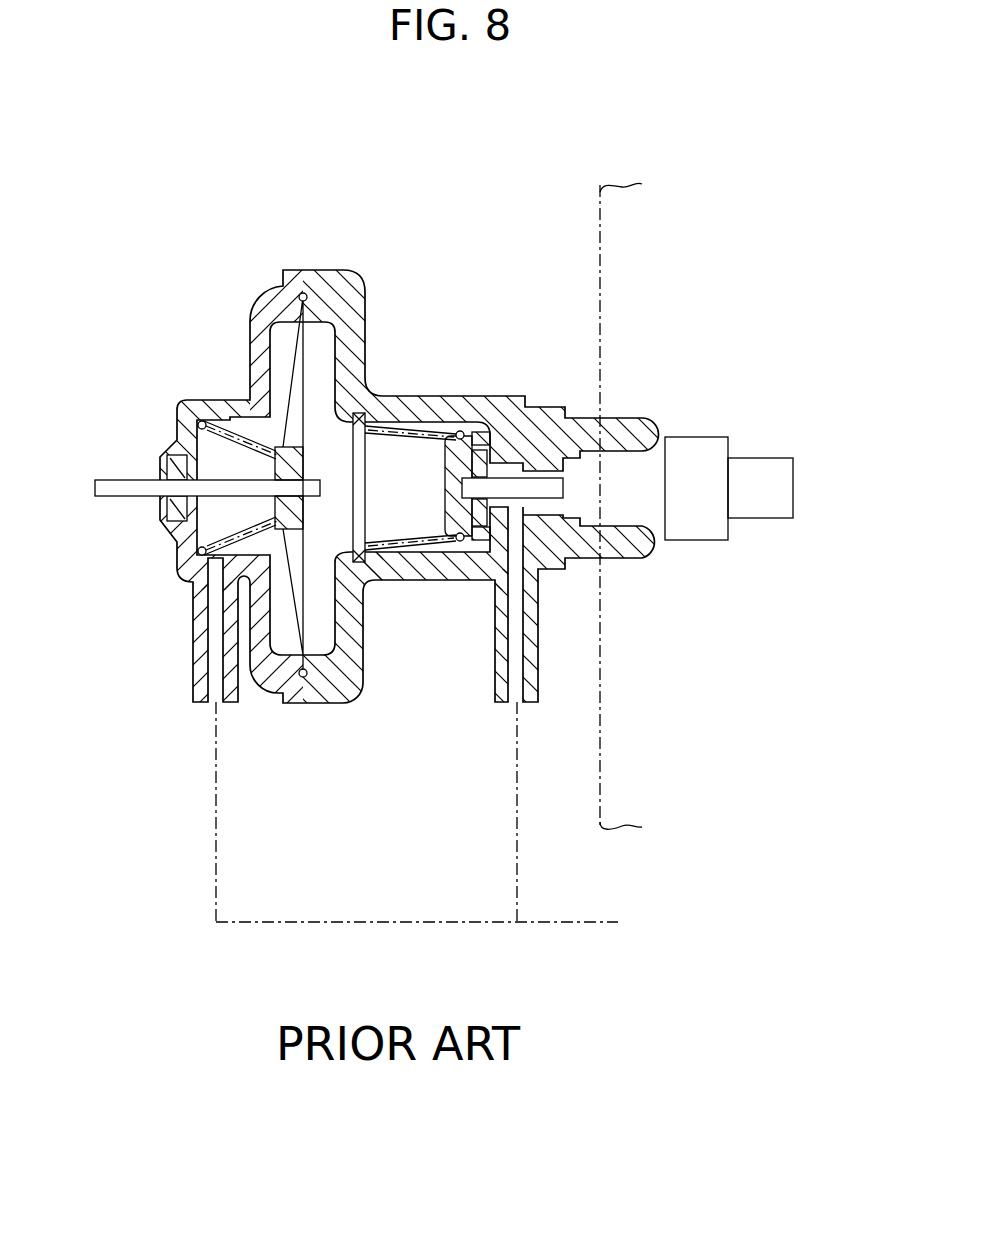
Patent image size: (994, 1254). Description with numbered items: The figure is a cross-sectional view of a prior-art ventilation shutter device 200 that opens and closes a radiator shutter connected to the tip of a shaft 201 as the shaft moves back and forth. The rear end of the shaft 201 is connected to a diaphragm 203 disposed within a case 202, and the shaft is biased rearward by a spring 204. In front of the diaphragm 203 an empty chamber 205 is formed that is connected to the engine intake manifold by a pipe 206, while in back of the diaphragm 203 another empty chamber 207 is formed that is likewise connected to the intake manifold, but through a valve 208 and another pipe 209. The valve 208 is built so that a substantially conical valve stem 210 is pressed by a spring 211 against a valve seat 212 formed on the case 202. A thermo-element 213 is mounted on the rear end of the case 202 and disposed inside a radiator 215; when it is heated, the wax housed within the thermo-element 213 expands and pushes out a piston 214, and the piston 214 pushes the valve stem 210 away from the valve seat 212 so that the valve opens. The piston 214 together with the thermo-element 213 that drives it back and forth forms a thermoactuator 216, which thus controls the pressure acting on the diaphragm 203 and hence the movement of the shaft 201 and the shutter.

The ventilation shutter device 200 is at (484, 190).
The shaft 201 is at (118, 480).
The case 202 is at (353, 298).
The diaphragm 203 is at (303, 362).
The spring 204 is at (245, 440).
The empty chamber 205 is at (283, 345).
The pipe 206 is at (217, 650).
The empty chamber 207 is at (318, 395).
The valve 208 is at (500, 452).
The pipe 209 is at (515, 673).
The valve stem 210 is at (541, 518).
The spring 211 is at (432, 560).
The valve seat 212 is at (502, 520).
The thermo-element 213 is at (767, 458).
The piston 214 is at (557, 488).
The radiator 215 is at (614, 268).
The thermoactuator 216 is at (699, 428).